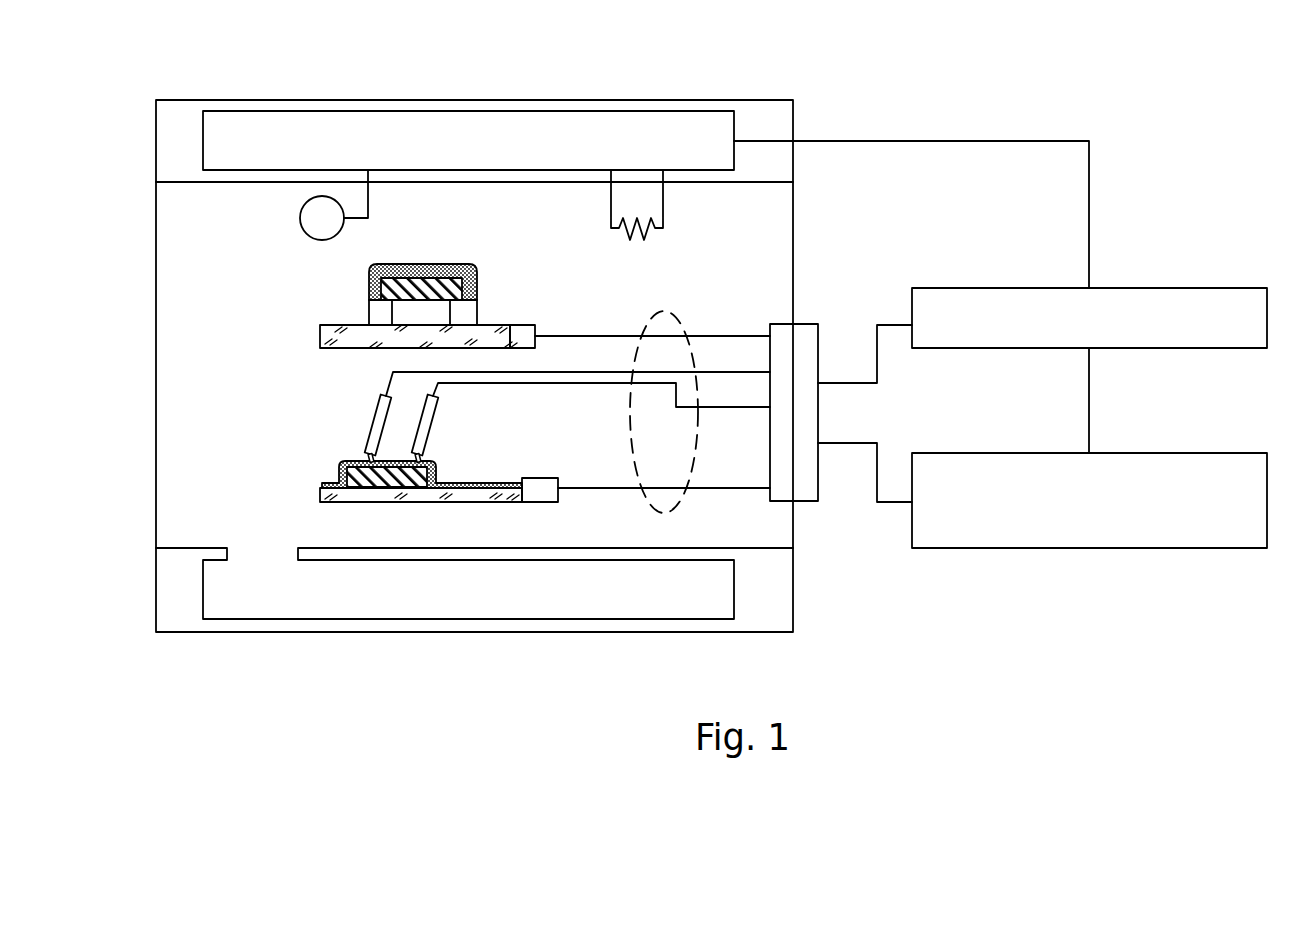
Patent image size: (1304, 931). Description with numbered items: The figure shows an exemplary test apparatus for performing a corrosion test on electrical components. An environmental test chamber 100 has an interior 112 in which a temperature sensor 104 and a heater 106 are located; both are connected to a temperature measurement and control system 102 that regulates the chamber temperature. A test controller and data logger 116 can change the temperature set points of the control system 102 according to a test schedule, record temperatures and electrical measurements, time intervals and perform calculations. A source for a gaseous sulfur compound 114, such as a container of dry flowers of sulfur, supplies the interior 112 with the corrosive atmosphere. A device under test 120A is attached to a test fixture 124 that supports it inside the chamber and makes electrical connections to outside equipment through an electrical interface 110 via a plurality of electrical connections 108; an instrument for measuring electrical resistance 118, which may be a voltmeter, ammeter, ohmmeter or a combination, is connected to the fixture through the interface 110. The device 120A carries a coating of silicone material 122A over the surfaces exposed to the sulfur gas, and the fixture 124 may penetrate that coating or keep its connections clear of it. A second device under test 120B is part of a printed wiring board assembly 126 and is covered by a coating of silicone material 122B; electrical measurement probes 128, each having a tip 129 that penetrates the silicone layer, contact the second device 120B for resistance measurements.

The environmental test chamber 100 is at (711, 359).
The temperature measurement and control system 102 is at (227, 110).
The temperature sensor 104 is at (298, 217).
The heater 106 is at (652, 238).
The electrical connections 108 is at (663, 310).
The electrical interface 110 is at (818, 324).
The interior 112 is at (215, 227).
The source for a gaseous sulfur compound 114 is at (380, 620).
The test controller and data logger 116 is at (1135, 288).
The instrument for measuring electrical resistance 118 is at (1135, 453).
The device under test 120A is at (423, 303).
The second device under test 120B is at (368, 490).
The coating of silicone material 122A is at (457, 265).
The coating of silicone material 122B is at (335, 487).
The test fixture 124 is at (480, 322).
The printed wiring board assembly 126 is at (485, 502).
The electrical measurement probes 128 is at (377, 417).
The tip 129 is at (370, 458).